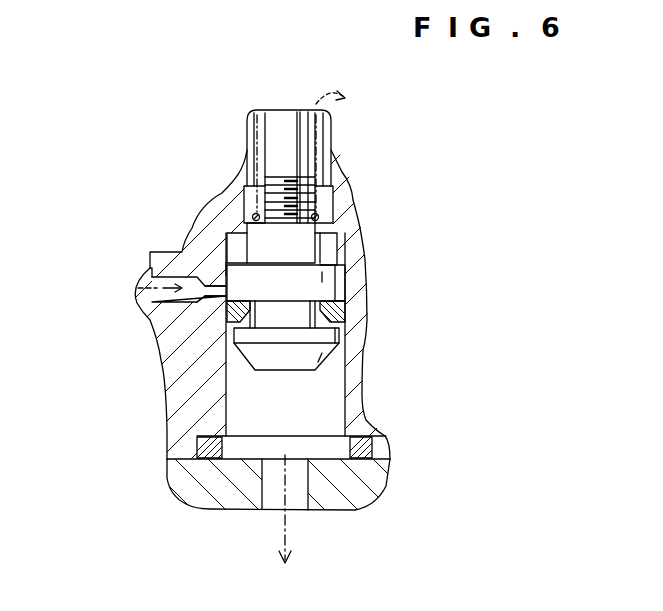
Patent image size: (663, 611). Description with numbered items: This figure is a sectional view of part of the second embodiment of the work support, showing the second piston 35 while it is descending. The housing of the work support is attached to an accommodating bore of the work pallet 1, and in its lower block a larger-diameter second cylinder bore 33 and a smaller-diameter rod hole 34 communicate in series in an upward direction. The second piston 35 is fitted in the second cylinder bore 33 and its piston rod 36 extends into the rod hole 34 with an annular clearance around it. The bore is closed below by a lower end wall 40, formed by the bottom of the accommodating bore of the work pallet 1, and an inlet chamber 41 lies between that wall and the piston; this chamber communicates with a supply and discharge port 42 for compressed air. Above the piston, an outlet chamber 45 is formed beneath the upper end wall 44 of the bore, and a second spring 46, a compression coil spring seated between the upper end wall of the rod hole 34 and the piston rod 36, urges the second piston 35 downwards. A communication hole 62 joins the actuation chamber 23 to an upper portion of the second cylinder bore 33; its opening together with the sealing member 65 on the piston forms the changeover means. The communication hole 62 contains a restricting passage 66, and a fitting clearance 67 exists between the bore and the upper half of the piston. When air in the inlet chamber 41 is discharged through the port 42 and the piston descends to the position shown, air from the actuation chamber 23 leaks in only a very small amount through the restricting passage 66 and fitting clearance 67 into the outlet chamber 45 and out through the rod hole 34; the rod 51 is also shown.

The work pallet 1 is at (375, 478).
The actuation chamber 23 is at (143, 252).
The second cylinder bore 33 is at (340, 378).
The rod hole 34 is at (330, 145).
The second piston 35 is at (352, 282).
The piston rod 36 is at (327, 243).
The lower end wall 40 is at (245, 472).
The inlet chamber 41 is at (330, 412).
The supply and discharge port 42 is at (273, 498).
The upper end wall 44 is at (232, 232).
The outlet chamber 45 is at (338, 252).
The second spring 46 is at (320, 216).
The rod 51 is at (280, 120).
The communication hole 62 is at (162, 301).
The sealing member 65 is at (343, 327).
The restricting passage 66 is at (222, 293).
The fitting clearance 67 is at (226, 270).